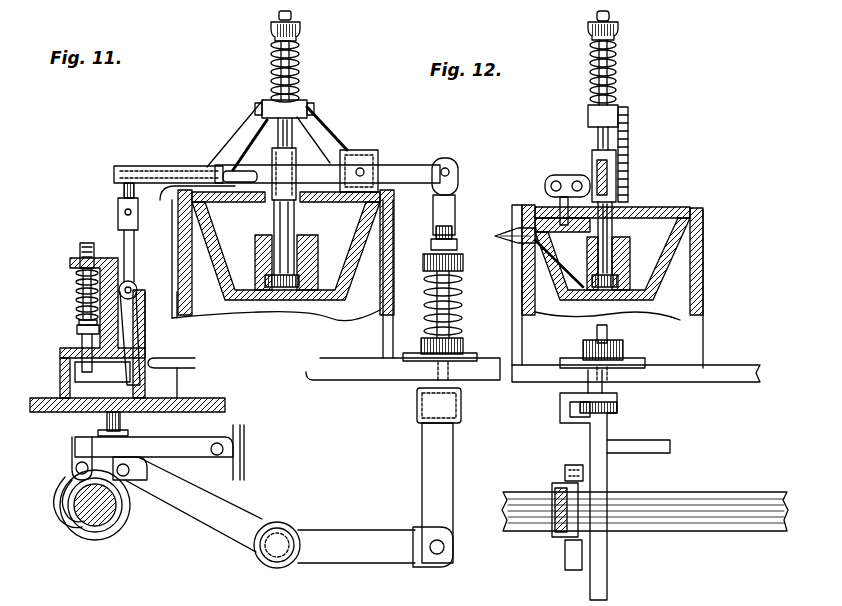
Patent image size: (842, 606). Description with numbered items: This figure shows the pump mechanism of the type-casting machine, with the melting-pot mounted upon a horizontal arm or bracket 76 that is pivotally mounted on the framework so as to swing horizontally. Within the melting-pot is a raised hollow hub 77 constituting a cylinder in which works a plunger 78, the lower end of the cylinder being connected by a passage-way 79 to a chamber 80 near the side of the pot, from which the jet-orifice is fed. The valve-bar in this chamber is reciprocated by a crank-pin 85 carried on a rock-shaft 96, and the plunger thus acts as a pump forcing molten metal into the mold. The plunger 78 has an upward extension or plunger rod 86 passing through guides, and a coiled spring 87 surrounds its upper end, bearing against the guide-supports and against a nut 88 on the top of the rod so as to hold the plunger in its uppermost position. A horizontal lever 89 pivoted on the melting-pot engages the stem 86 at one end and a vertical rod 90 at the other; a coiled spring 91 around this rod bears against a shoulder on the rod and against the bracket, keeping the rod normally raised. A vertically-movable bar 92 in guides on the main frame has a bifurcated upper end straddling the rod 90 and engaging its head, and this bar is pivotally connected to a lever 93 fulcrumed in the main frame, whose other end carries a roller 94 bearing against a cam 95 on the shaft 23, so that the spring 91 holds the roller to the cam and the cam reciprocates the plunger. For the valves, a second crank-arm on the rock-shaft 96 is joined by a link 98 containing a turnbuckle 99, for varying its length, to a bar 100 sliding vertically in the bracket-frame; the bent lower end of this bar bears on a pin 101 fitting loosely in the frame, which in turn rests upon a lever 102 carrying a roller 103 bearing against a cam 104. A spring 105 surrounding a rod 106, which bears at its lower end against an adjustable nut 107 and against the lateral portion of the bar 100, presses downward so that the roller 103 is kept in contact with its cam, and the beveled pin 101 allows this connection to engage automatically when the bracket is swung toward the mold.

In FIG. 11, the shaft 23 is at (83, 513).
In FIG. 12, the shaft 23 is at (698, 520).
In FIG. 11, the bracket 76 is at (405, 372).
In FIG. 12, the bracket 76 is at (665, 371).
In FIG. 11, the hollow hub 77 is at (300, 255).
In FIG. 12, the hollow hub 77 is at (635, 250).
In FIG. 11, the plunger 78 is at (280, 243).
In FIG. 12, the plunger 78 is at (610, 240).
In FIG. 12, the passage-way 79 is at (558, 280).
In FIG. 12, the chamber 80 is at (515, 232).
In FIG. 12, the crank-pin 85 is at (568, 175).
In FIG. 11, the plunger rod 86 is at (292, 82).
In FIG. 12, the plunger rod 86 is at (612, 80).
In FIG. 11, the coiled spring 87 is at (268, 58).
In FIG. 12, the coiled spring 87 is at (590, 80).
In FIG. 11, the nut 88 is at (302, 33).
In FIG. 12, the nut 88 is at (618, 32).
In FIG. 11, the horizontal lever 89 is at (395, 170).
In FIG. 12, the horizontal lever 89 is at (612, 175).
In FIG. 11, the vertical rod 90 is at (446, 240).
In FIG. 12, the vertical rod 90 is at (608, 334).
In FIG. 11, the coiled spring 91 is at (460, 300).
In FIG. 11, the vertically-movable bar 92 is at (433, 458).
In FIG. 12, the vertically-movable bar 92 is at (588, 432).
In FIG. 11, the lever 93 is at (245, 523).
In FIG. 12, the lever 93 is at (570, 537).
In FIG. 11, the roller 94 is at (133, 482).
In FIG. 11, the cam 95 is at (110, 528).
In FIG. 11, the rock-shaft 96 is at (240, 175).
In FIG. 11, the link 98 is at (124, 191).
In FIG. 11, the turnbuckle 99 is at (118, 218).
In FIG. 11, the bar 100 is at (133, 305).
In FIG. 11, the pin 101 is at (122, 395).
In FIG. 11, the lever 102 is at (187, 433).
In FIG. 11, the roller 103 is at (72, 468).
In FIG. 11, the cam 104 is at (62, 480).
In FIG. 11, the spring 105 is at (77, 290).
In FIG. 11, the rod 106 is at (80, 311).
In FIG. 11, the adjustable nut 107 is at (78, 330).